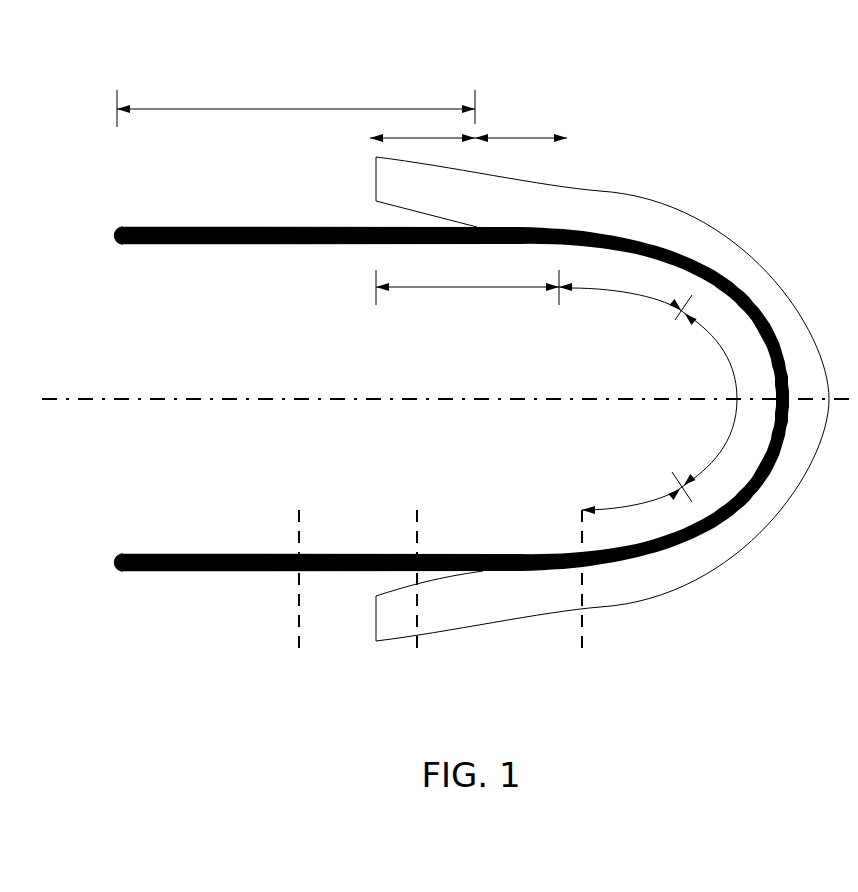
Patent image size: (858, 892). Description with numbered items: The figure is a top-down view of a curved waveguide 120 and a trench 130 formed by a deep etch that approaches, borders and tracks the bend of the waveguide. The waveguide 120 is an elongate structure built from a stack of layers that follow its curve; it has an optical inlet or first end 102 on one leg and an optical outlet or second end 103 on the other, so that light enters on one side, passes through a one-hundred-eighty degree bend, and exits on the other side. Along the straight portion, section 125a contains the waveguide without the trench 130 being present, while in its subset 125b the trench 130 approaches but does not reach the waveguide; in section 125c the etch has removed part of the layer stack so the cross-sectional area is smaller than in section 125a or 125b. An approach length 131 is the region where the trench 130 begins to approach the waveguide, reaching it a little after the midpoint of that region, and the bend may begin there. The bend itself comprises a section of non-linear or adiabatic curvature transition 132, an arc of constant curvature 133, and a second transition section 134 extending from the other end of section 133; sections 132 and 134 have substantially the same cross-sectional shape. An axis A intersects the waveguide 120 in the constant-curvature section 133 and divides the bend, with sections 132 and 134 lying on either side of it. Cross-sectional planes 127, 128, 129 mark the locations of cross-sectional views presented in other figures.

The axis A is at (130, 399).
The first end 102 is at (150, 572).
The second end 103 is at (148, 226).
The waveguide 120 is at (270, 245).
The section 125a is at (296, 103).
The subset of section 125b is at (422, 125).
The section 125c is at (521, 123).
The cross-sectional plane 127 is at (299, 599).
The cross-sectional plane 128 is at (417, 599).
The cross-sectional plane 129 is at (582, 599).
The trench 130 is at (625, 192).
The approach length 131 is at (467, 299).
The section of non-linear transition in curvature 132 is at (625, 306).
The section of constant curvature 133 is at (709, 399).
The section of non-linear transition in curvature 134 is at (637, 493).